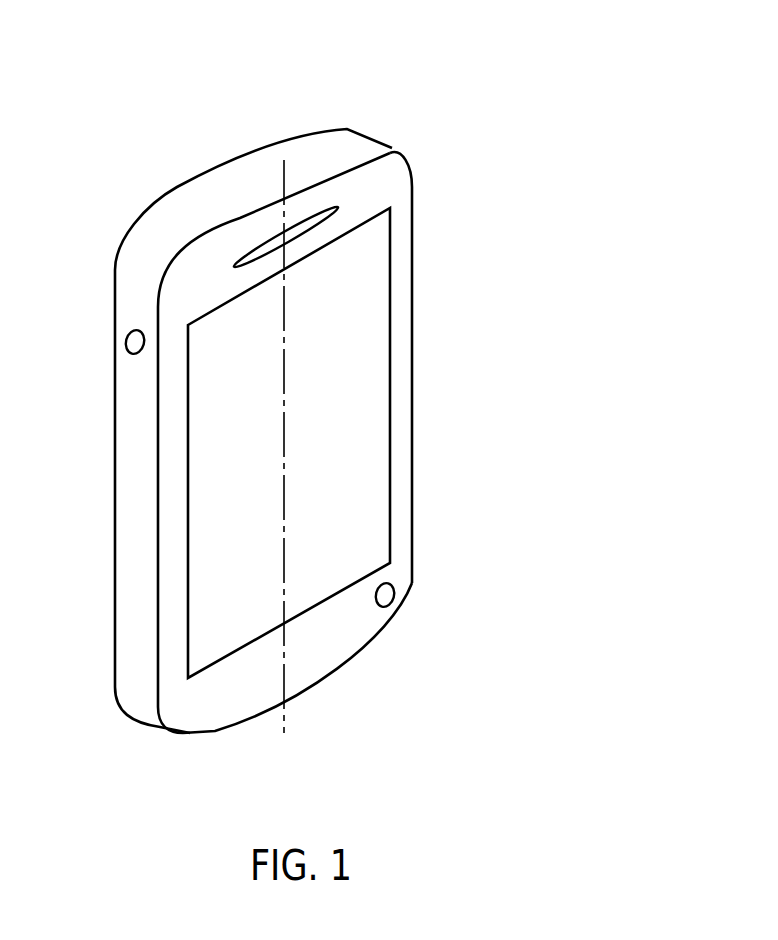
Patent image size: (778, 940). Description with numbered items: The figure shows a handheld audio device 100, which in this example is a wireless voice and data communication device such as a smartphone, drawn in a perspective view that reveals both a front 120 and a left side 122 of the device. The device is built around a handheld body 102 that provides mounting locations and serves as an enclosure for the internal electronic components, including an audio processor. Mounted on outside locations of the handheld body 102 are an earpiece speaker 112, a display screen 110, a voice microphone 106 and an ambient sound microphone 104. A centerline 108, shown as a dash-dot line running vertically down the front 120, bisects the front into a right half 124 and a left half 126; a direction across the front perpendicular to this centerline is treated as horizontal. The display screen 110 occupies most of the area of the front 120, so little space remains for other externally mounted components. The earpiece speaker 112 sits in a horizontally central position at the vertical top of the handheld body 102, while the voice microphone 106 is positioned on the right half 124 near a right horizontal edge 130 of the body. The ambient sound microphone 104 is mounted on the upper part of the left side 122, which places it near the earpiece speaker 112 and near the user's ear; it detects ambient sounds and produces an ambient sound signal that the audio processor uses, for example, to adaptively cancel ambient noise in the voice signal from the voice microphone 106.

The handheld audio device 100 is at (376, 99).
The handheld body 102 is at (217, 731).
The ambient sound microphone 104 is at (125, 338).
The voice microphone 106 is at (395, 596).
The centerline 108 is at (282, 219).
The display screen 110 is at (362, 397).
The earpiece speaker 112 is at (295, 233).
The front 120 is at (375, 167).
The left side 122 is at (117, 530).
The right half 124 is at (398, 187).
The left half 126 is at (187, 280).
The right horizontal edge 130 is at (413, 550).